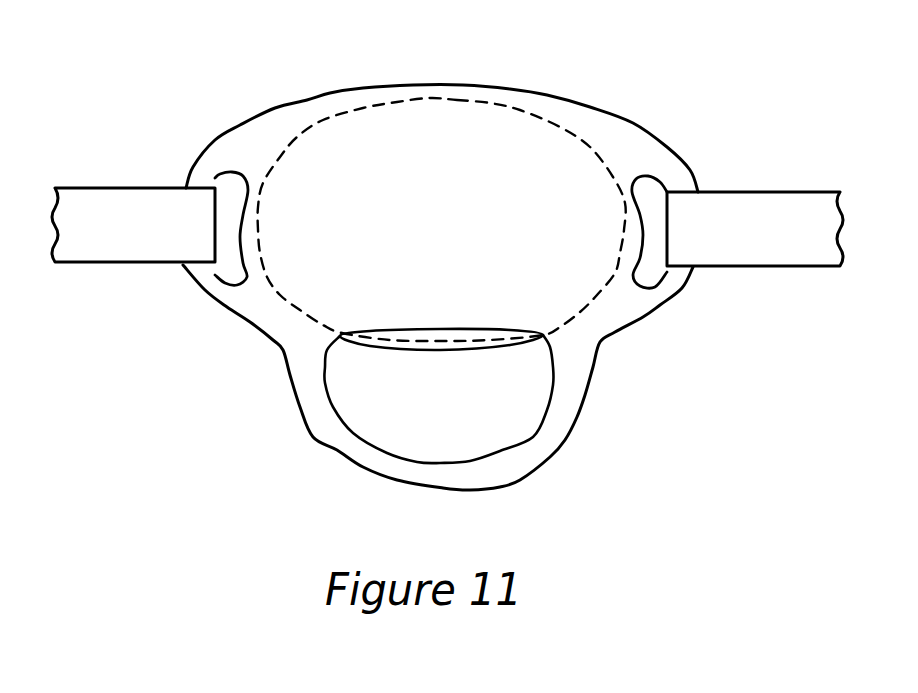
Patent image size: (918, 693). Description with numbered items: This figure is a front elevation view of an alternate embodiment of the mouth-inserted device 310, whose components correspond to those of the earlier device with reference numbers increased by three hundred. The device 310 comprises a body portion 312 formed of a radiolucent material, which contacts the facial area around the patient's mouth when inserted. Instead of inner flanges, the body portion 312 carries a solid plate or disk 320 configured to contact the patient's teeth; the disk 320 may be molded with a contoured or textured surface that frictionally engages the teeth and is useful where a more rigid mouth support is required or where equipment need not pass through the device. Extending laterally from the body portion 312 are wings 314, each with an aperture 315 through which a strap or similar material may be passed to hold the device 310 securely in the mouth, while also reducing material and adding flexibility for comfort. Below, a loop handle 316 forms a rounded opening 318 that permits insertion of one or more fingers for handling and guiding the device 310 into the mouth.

The device 310 is at (307, 101).
The body portion 312 is at (268, 315).
The wings 314 is at (253, 140).
The apertures 315 is at (233, 260).
The loop handle 316 is at (560, 396).
The rounded opening 318 is at (477, 420).
The solid plate or disk 320 is at (577, 273).